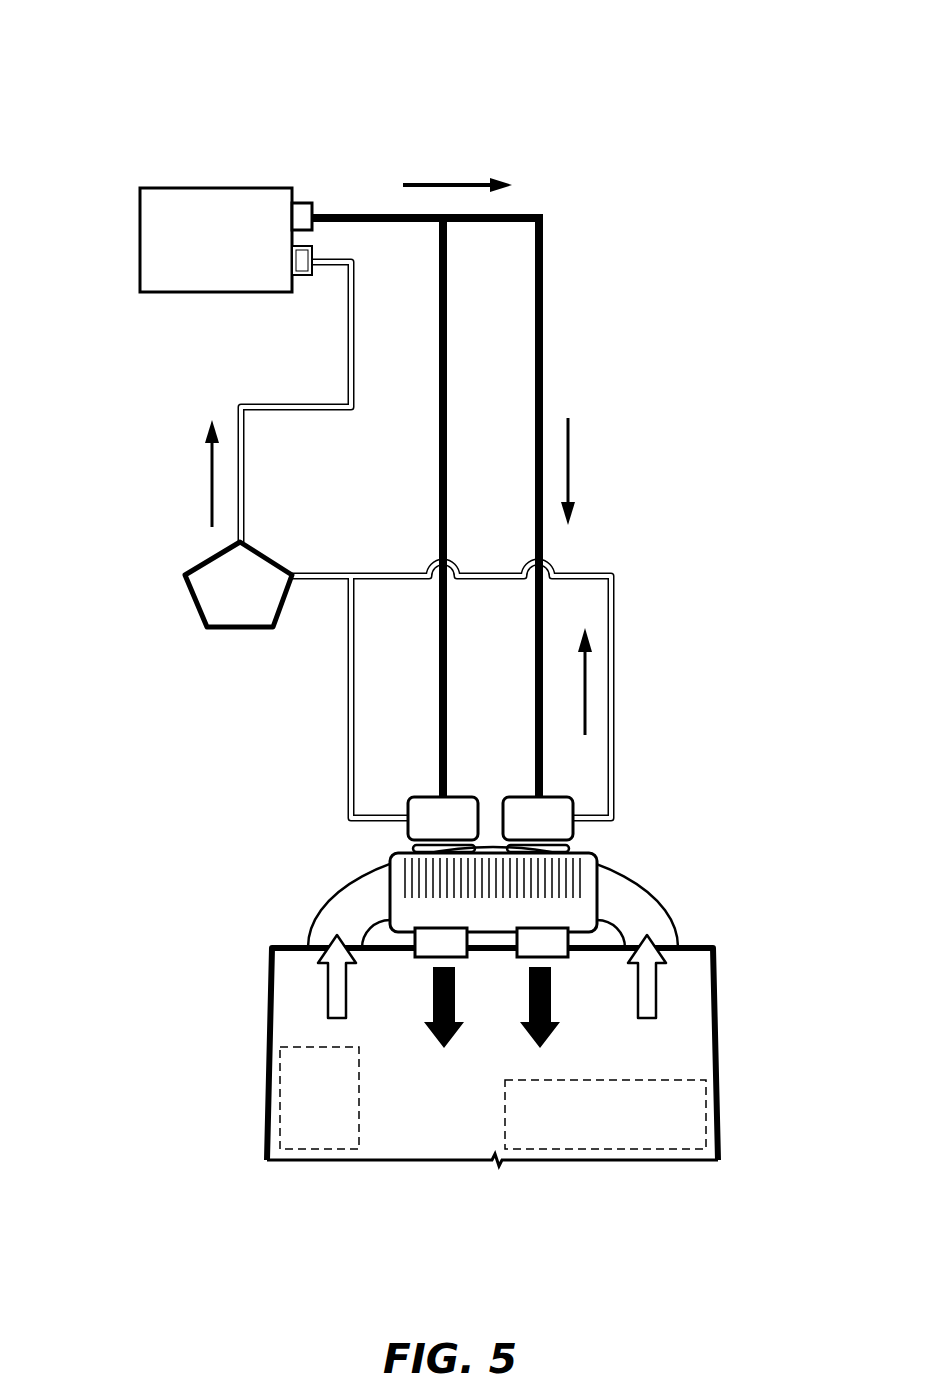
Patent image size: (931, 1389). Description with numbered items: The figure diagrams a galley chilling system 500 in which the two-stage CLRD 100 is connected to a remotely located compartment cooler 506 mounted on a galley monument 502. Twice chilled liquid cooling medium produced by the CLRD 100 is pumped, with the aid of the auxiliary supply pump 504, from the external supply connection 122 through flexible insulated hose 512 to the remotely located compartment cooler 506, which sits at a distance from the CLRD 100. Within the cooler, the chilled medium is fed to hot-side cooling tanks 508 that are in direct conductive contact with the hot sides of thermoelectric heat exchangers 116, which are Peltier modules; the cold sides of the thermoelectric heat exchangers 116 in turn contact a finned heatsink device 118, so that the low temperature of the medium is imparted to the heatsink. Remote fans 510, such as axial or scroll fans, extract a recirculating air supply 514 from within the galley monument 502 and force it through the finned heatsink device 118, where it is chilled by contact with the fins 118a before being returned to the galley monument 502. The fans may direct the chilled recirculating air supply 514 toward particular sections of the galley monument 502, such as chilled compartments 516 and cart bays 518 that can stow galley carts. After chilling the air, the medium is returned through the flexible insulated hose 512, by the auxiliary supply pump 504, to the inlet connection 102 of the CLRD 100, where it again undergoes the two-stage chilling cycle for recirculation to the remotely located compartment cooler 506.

The galley chilling system 500 is at (131, 65).
The CLRD 100 is at (240, 258).
The external supply connection 122 is at (298, 219).
The inlet connection 102 is at (300, 263).
The flexible insulated hose 512 is at (544, 377).
The auxiliary supply pump 504 is at (245, 610).
The hot-side cooling tanks 508 is at (543, 812).
The thermoelectric heat exchangers 116 is at (560, 843).
The finned heatsink device 118 is at (372, 877).
The fins 118a is at (453, 875).
The remotely located compartment cooler 506 is at (714, 827).
The remote fans 510 is at (541, 947).
The galley monument 502 is at (712, 1012).
The recirculating air supply 514 is at (338, 992).
The chilled compartments 516 is at (322, 1125).
The cart bays 518 is at (613, 1113).